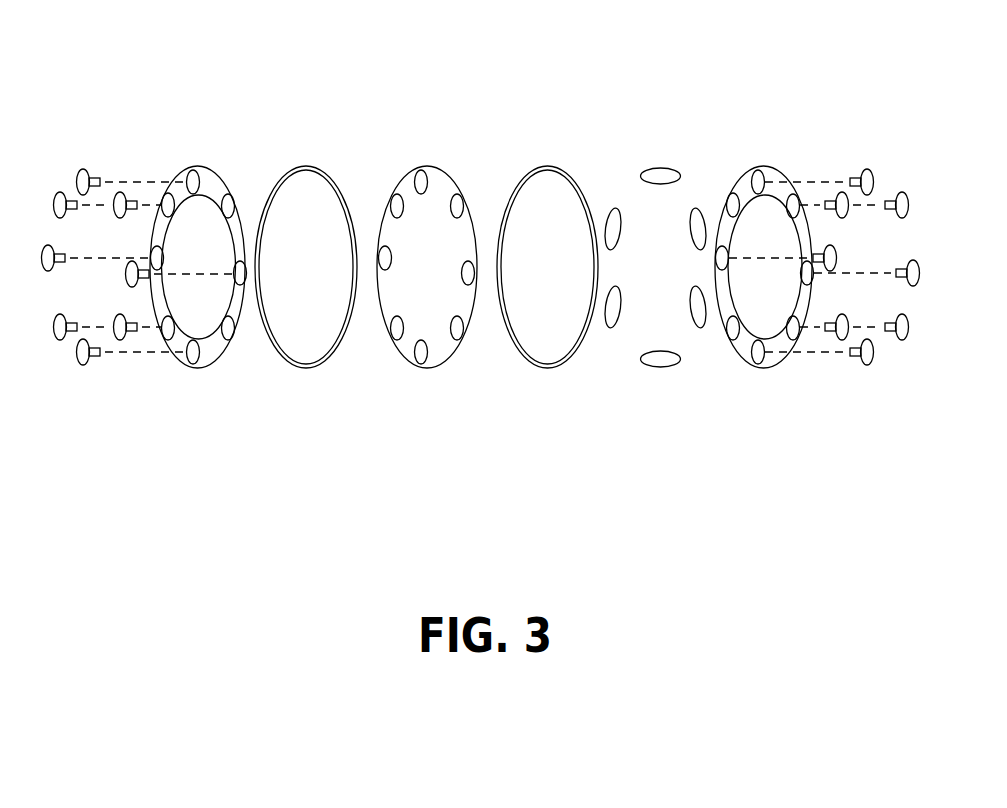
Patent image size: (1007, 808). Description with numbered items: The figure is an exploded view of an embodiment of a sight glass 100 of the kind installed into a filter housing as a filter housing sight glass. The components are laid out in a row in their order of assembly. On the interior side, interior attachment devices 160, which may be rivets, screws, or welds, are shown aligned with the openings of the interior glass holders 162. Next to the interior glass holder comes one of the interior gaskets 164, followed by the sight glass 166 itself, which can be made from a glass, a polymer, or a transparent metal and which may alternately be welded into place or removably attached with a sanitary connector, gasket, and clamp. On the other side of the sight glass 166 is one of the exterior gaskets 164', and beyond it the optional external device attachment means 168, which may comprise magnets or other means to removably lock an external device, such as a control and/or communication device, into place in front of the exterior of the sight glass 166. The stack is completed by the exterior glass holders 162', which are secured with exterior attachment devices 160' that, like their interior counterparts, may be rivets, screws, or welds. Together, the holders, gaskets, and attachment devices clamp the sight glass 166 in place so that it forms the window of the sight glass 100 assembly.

The sight glass 100 is at (497, 65).
The interior attachment devices 160 is at (138, 329).
The interior glass holders 162 is at (198, 327).
The interior gaskets 164 is at (306, 327).
The sight glass 166 is at (427, 400).
The exterior gaskets 164' is at (547, 327).
The external device attachment means 168 is at (660, 400).
The exterior glass holders 162' is at (764, 327).
The exterior attachment devices 160' is at (824, 329).